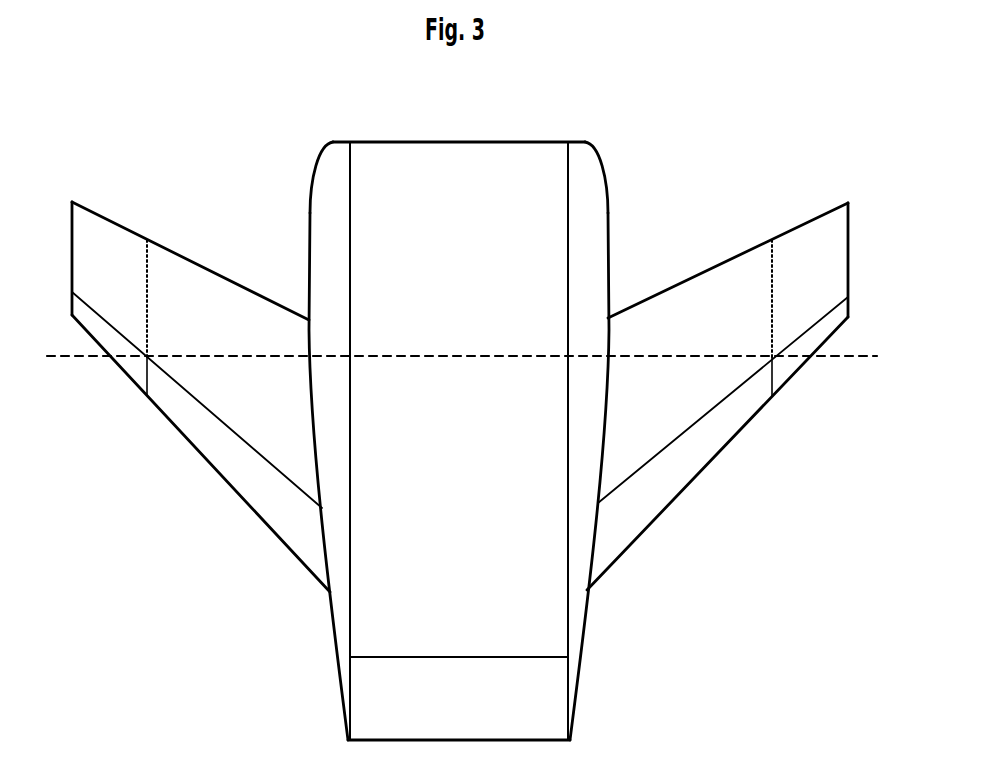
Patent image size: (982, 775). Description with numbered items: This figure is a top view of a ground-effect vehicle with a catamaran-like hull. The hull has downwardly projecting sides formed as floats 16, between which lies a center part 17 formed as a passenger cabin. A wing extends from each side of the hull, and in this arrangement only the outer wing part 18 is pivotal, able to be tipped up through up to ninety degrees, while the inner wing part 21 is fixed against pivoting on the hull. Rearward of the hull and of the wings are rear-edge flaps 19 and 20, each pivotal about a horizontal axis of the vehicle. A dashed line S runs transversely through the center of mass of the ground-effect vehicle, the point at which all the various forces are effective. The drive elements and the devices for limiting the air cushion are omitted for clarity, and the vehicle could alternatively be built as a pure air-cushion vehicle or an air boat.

The floats 16 is at (459, 146).
The center part 17 is at (459, 441).
The outer wing part 18 is at (460, 279).
The rear-edge flap 19 is at (263, 487).
The rear-edge flap 20 is at (137, 365).
The inner wing part 21 is at (460, 284).
The dashed line S is at (474, 378).